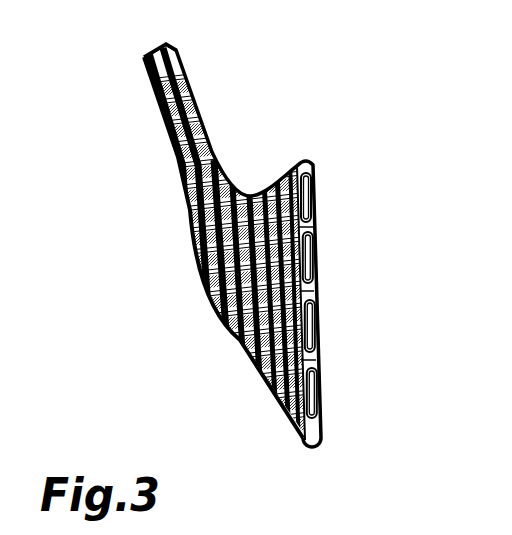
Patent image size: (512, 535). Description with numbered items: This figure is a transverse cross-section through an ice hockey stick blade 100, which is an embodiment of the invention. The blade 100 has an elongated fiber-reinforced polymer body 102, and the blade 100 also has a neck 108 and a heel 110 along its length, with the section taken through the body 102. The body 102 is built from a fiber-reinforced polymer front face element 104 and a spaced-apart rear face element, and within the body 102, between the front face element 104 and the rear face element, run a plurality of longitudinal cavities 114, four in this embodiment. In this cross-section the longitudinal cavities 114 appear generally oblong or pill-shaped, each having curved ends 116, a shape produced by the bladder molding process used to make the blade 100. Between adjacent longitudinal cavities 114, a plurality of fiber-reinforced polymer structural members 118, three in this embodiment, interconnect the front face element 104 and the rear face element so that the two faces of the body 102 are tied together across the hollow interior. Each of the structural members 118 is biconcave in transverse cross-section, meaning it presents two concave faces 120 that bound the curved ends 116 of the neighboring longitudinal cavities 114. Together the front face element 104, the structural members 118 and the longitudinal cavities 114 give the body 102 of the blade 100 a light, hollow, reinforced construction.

The ice hockey stick blade 100 is at (272, 240).
The fiber-reinforced polymer body 102 is at (189, 240).
The front face element 104 is at (215, 313).
The neck 108 is at (203, 57).
The heel 110 is at (148, 308).
The longitudinal cavities 114 is at (274, 311).
The curved ends 116 is at (190, 222).
The structural members 118 is at (318, 248).
The concave faces 120 is at (197, 265).